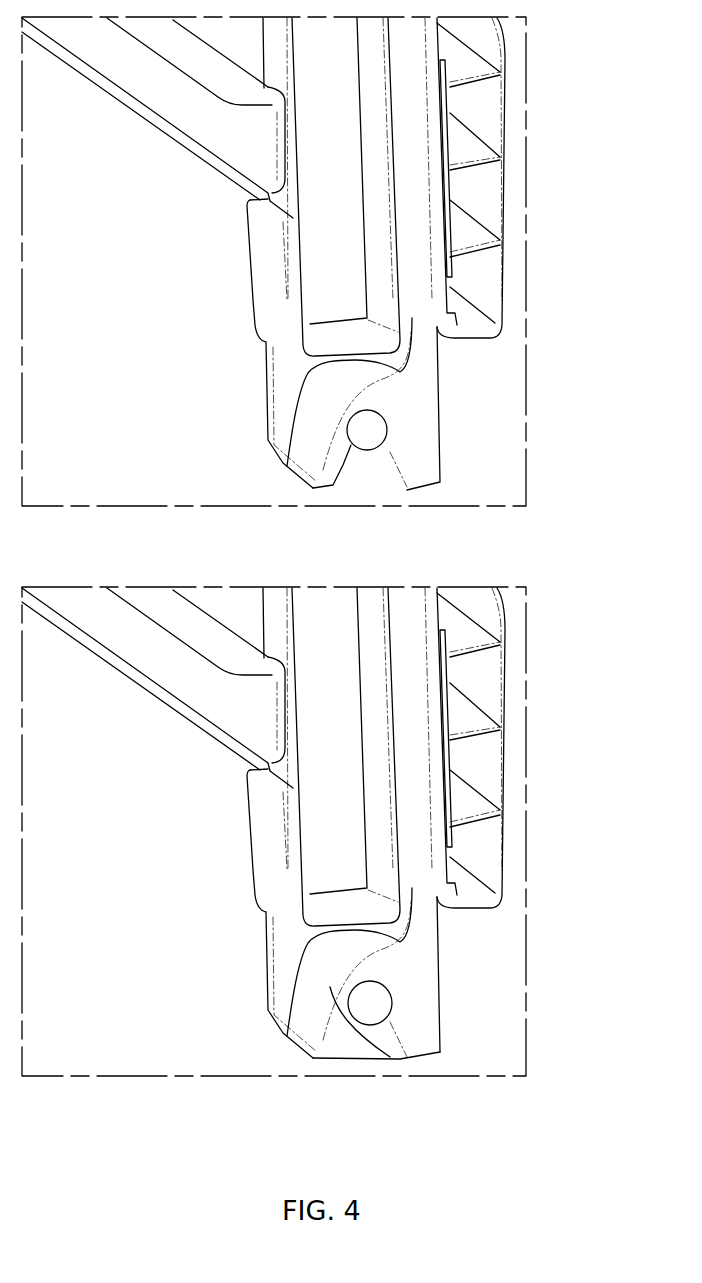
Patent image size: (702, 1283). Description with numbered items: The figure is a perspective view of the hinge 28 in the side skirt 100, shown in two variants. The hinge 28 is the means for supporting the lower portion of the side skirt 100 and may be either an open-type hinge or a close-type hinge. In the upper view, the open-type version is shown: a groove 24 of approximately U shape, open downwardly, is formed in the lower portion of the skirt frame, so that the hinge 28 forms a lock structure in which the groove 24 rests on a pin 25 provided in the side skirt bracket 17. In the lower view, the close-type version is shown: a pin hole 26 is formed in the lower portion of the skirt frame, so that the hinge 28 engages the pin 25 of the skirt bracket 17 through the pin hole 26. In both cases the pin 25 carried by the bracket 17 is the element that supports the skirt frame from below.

The side skirt bracket 17 is at (340, 208).
The side skirt 100 is at (483, 117).
The pin 25 is at (368, 433).
The groove 24 is at (340, 473).
The pin hole 26 is at (307, 1057).
The hinge 28 is at (368, 463).